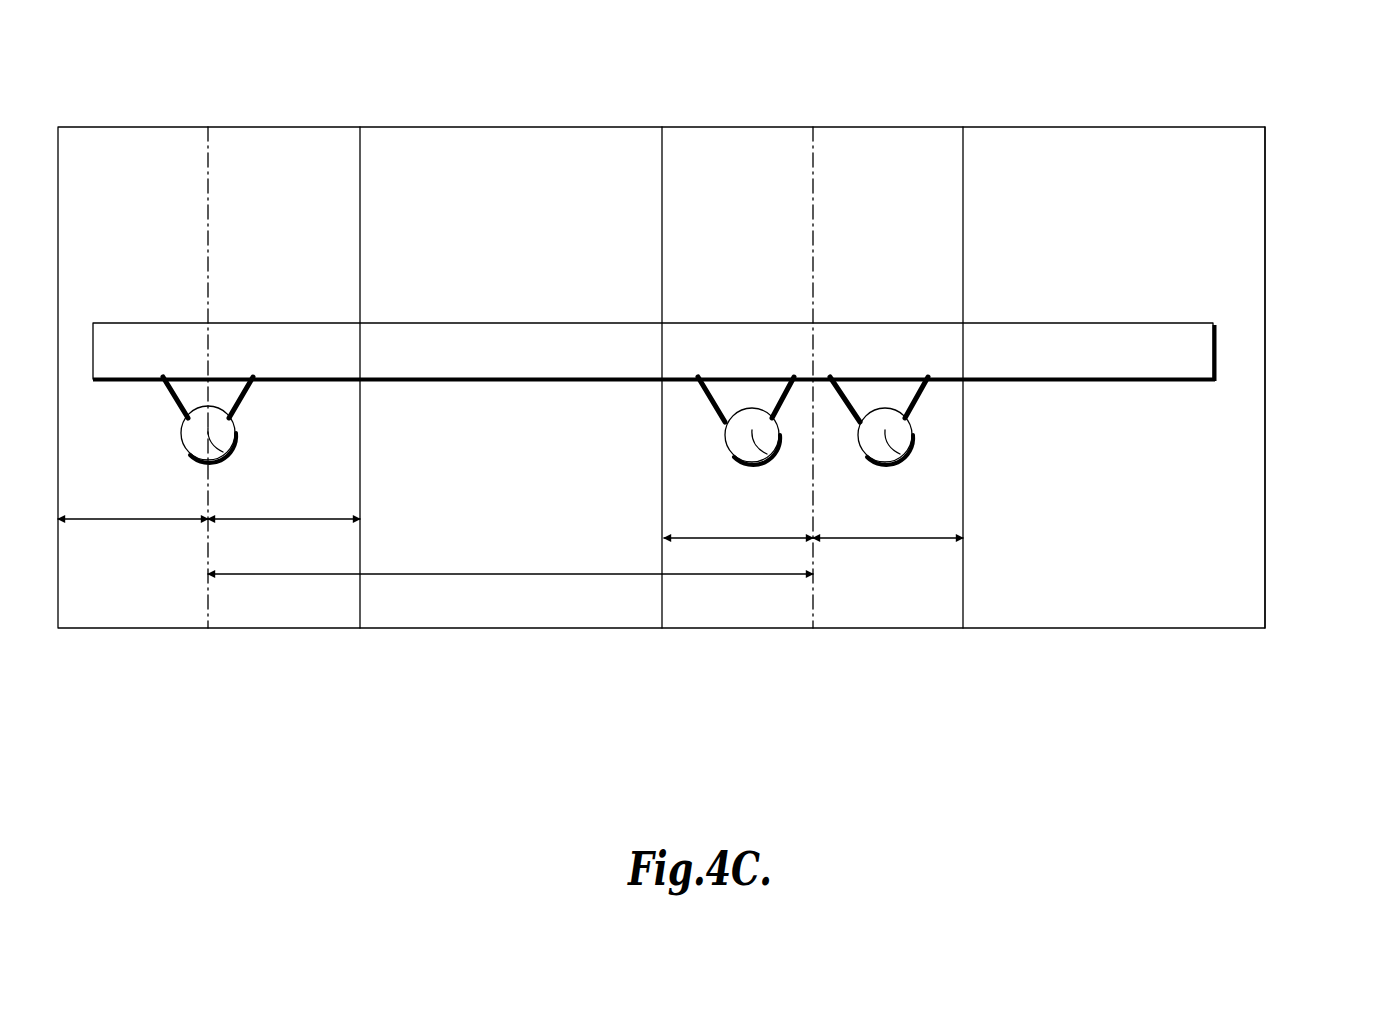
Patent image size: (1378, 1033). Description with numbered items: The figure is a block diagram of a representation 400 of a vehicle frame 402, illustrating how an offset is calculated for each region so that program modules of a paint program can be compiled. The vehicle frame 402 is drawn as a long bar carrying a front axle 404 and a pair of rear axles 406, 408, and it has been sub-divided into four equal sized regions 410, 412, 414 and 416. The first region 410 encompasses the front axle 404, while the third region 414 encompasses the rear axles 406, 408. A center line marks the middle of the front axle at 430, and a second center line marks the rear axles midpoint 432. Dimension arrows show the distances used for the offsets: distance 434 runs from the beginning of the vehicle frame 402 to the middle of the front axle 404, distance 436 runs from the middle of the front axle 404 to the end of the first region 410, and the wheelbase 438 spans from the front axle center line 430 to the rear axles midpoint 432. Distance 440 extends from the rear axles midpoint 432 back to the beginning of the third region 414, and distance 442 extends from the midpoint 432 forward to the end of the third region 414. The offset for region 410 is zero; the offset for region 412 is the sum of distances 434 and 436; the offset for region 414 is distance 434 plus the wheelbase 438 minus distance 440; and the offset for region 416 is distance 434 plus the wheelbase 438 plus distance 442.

The representation of a vehicle frame 400 is at (205, 125).
The vehicle frame 402 is at (1216, 358).
The front axle 404 is at (222, 456).
The rear axle 406 is at (768, 458).
The rear axle 408 is at (901, 458).
The first region 410 is at (332, 377).
The second region 412 is at (633, 377).
The third region 414 is at (935, 377).
The fourth region 416 is at (1241, 377).
The front axle midpoint 430 is at (209, 234).
The rear axles midpoint 432 is at (813, 200).
The distance 434 is at (110, 519).
The distance 436 is at (313, 519).
The wheelbase 438 is at (540, 574).
The distance 440 is at (750, 538).
The distance 442 is at (892, 538).